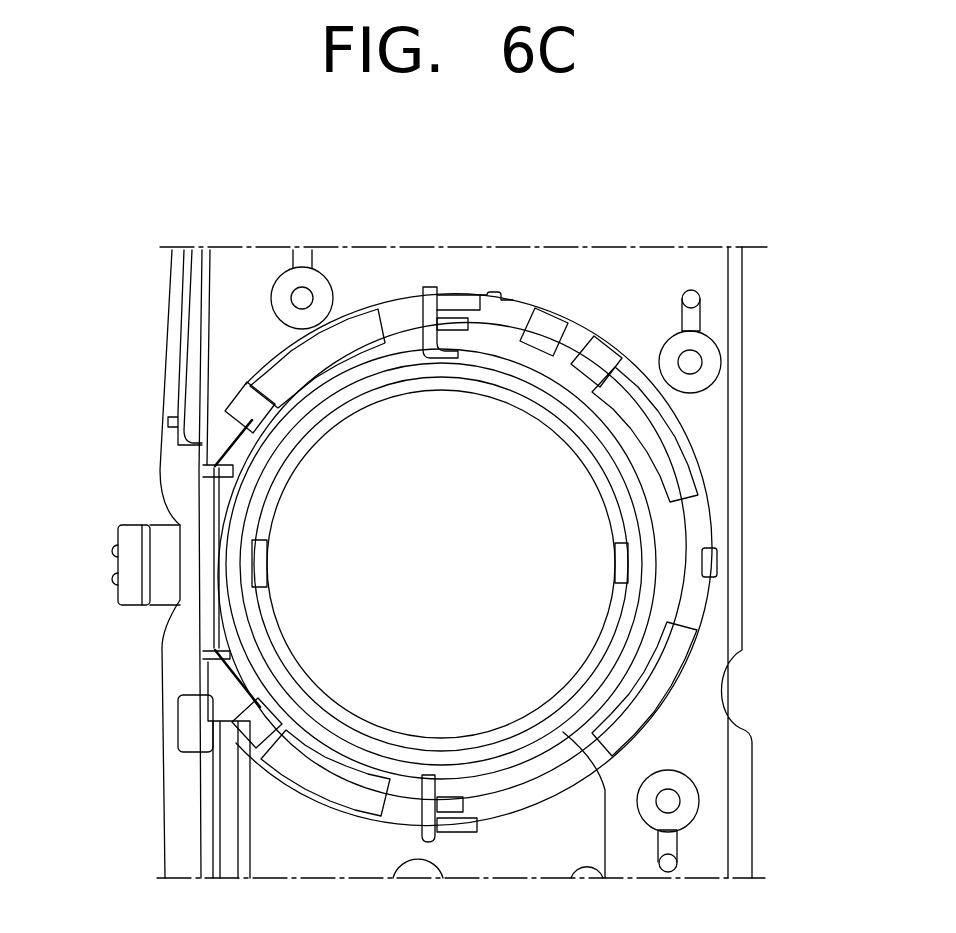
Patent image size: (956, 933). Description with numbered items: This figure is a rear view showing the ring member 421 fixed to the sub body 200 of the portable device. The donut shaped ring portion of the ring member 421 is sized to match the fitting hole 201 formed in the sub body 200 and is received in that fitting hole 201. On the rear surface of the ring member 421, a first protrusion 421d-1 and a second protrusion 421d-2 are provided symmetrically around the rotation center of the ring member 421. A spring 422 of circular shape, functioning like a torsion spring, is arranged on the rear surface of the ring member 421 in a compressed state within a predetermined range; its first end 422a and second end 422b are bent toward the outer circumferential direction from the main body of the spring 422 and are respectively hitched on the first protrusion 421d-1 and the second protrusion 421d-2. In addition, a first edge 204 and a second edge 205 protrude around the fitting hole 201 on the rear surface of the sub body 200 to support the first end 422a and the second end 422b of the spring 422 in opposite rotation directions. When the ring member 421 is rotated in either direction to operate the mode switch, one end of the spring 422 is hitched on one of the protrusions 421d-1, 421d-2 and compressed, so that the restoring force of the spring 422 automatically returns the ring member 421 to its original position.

The sub body 200 is at (182, 820).
The fitting hole 201 is at (297, 595).
The first edge 204 is at (457, 293).
The second edge 205 is at (455, 831).
The ring member 421 is at (682, 535).
The first protrusion 421d-1 is at (468, 325).
The second protrusion 421d-2 is at (487, 807).
The spring 422 is at (572, 740).
The first end of the spring 422a is at (402, 325).
The second end of the spring 422b is at (422, 807).